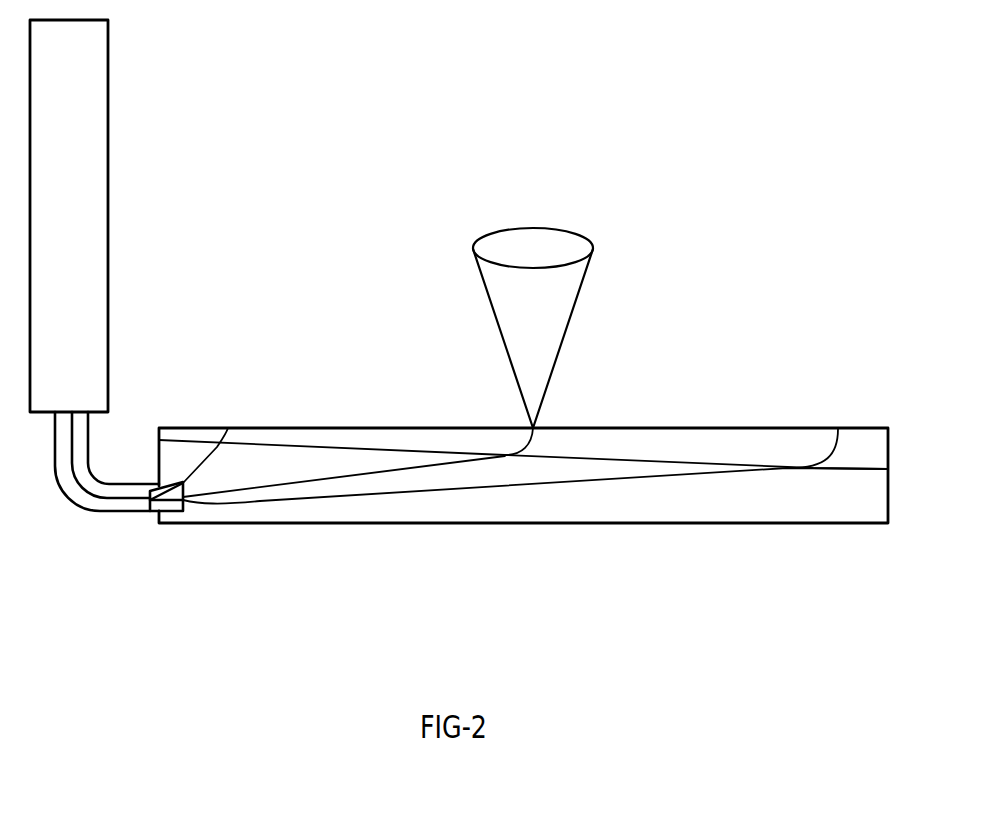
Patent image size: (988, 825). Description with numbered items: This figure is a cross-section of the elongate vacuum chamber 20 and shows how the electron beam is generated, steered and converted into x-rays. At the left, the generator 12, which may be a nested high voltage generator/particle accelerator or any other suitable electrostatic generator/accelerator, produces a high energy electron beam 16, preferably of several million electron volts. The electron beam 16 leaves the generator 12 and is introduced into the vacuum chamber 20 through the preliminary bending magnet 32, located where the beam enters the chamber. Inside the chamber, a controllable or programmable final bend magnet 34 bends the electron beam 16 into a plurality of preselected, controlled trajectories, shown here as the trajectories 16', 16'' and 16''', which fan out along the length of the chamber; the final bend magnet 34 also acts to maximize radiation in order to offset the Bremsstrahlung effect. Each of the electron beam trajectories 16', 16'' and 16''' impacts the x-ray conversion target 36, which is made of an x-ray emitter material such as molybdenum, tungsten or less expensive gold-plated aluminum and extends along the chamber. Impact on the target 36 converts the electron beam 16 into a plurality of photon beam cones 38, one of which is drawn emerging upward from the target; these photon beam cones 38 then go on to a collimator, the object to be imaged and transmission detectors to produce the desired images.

The generator 12 is at (87, 237).
The electron beam 16 is at (107, 516).
The electron beam trajectory 16' is at (200, 416).
The electron beam trajectory 16'' is at (344, 423).
The electron beam trajectory 16''' is at (535, 539).
The vacuum chamber 20 is at (677, 502).
The preliminary bending magnet 32 is at (172, 512).
The final bend magnet 34 is at (660, 459).
The x-ray conversion target 36 is at (582, 427).
The photon beam cone 38 is at (570, 281).